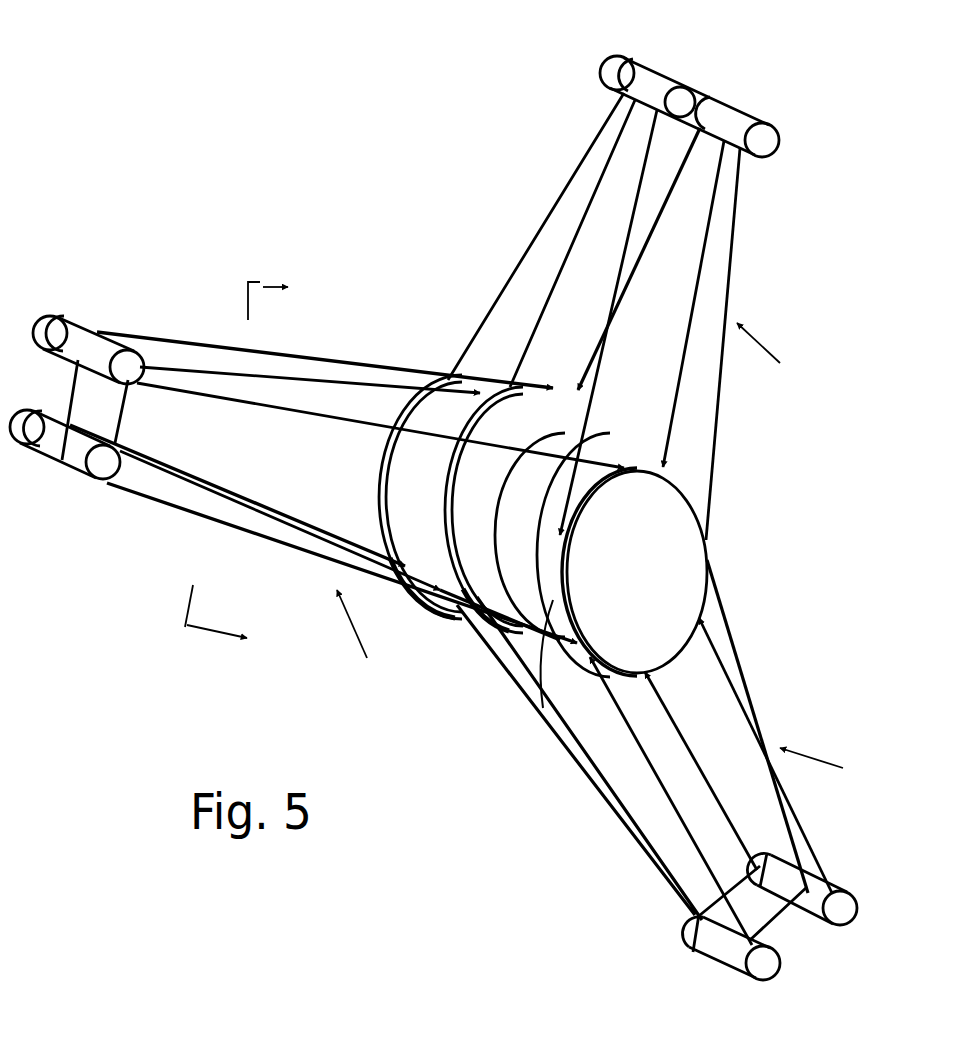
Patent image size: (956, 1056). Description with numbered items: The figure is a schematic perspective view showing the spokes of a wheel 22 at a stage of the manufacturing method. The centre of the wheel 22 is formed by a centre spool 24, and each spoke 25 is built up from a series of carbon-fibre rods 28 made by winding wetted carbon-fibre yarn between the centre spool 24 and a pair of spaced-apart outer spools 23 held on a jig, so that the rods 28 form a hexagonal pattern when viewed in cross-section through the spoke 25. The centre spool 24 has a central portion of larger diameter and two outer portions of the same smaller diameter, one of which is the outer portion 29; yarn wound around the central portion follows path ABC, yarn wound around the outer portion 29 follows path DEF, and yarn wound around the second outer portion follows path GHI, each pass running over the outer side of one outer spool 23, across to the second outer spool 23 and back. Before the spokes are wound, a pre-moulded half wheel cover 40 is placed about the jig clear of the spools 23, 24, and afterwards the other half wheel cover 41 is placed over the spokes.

The wheel 22 is at (403, 225).
The outer spools 23 is at (615, 70).
The centre spool 24 is at (685, 553).
The spoke 25 is at (588, 545).
The carbon-fibre rods 28 is at (570, 185).
The outer portion 29 is at (543, 708).
The pre-moulded half wheel cover 40 is at (463, 612).
The other half wheel cover 41 is at (395, 468).